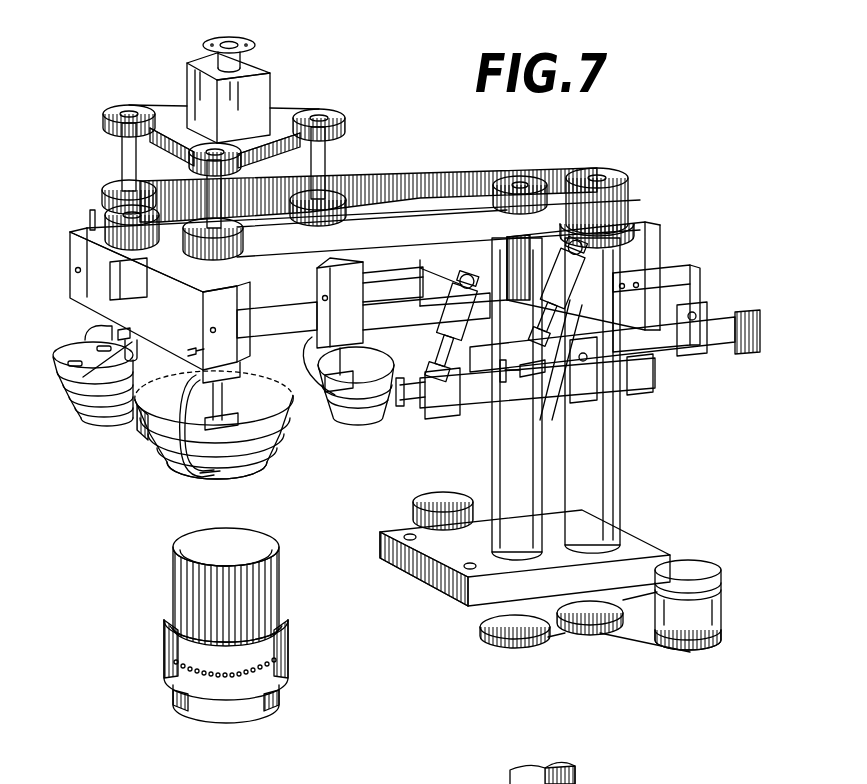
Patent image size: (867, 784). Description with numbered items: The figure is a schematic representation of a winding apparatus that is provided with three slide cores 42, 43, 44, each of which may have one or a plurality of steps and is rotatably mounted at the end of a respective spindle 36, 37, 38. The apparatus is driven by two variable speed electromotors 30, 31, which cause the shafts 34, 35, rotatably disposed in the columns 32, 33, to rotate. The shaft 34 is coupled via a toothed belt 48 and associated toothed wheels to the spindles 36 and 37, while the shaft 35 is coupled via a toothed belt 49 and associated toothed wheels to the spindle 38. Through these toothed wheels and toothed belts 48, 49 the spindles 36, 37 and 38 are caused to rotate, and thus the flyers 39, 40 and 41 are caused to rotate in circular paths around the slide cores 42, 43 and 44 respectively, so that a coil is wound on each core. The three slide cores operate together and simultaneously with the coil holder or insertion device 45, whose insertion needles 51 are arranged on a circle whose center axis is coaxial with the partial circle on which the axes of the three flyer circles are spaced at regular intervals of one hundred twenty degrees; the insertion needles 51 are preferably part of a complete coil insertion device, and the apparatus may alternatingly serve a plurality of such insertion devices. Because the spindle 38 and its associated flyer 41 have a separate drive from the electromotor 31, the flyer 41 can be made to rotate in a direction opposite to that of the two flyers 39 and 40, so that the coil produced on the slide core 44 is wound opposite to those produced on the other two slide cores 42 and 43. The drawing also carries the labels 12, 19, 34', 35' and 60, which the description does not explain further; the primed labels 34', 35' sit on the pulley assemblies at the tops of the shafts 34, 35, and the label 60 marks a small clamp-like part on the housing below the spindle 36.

The column block 12 is at (628, 244).
The drive motor with spindle and bracket 19 is at (128, 113).
The variable speed electromotor 30 is at (692, 567).
The variable speed electromotor 31 is at (444, 500).
The column 32 is at (617, 452).
The column 33 is at (498, 454).
The shaft 34 is at (603, 405).
The pulley 34' is at (597, 162).
The shaft 35 is at (512, 405).
The pulley 35' is at (510, 166).
The spindle 36 is at (215, 190).
The spindle 37 is at (136, 161).
The spindle 38 is at (327, 164).
The flyer 39 is at (148, 433).
The flyer 40 is at (87, 331).
The flyer 41 is at (338, 440).
The slide core 42 is at (268, 468).
The slide core 43 is at (63, 356).
The slide core 44 is at (400, 355).
The coil holder or insertion device 45 is at (178, 640).
The toothed belt 48 is at (468, 232).
The toothed belt 49 is at (430, 186).
The insertion needles 51 is at (178, 580).
The clamp 60 is at (190, 349).